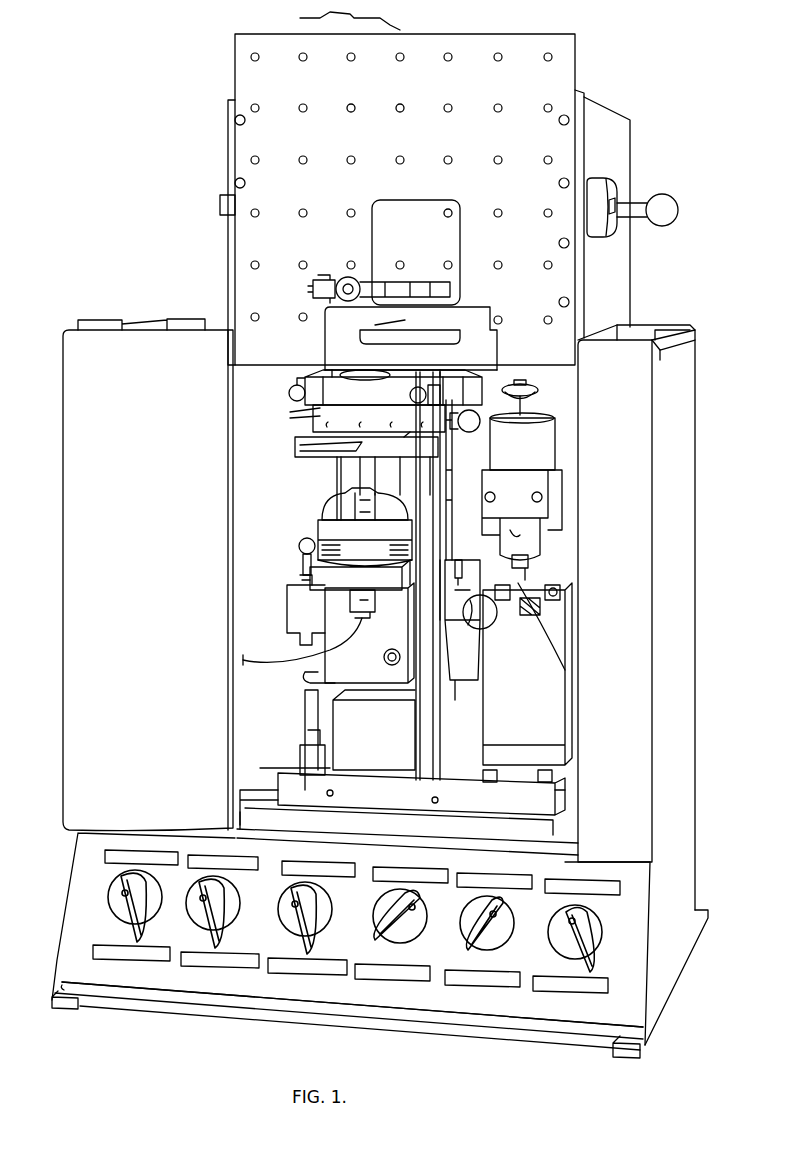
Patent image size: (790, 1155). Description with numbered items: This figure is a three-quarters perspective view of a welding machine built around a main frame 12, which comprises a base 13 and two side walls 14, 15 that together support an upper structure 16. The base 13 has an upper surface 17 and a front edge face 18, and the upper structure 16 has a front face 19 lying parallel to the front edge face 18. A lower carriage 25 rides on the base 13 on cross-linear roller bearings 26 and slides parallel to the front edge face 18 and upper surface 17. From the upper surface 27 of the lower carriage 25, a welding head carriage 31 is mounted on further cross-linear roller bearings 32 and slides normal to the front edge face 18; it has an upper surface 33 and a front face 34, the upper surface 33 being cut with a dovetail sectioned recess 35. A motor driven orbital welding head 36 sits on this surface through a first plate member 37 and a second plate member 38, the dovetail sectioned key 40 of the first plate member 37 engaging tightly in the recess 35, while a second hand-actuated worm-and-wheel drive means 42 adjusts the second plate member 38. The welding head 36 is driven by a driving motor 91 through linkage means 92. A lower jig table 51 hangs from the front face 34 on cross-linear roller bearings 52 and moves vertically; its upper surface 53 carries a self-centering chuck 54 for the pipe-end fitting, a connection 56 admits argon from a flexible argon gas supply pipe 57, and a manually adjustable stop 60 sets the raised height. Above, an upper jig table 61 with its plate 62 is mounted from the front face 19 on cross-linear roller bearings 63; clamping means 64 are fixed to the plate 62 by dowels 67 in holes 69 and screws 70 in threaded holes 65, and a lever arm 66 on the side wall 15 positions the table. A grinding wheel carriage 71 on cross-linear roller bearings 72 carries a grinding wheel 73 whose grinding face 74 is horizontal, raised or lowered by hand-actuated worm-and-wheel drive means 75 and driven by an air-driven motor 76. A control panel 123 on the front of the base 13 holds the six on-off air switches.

The main frame 12 is at (676, 941).
The base 13 is at (350, 836).
The side wall 14 is at (148, 575).
The side wall 15 is at (636, 617).
The upper structure 16 is at (620, 270).
The upper surface 17 is at (245, 790).
The front edge face 18 is at (557, 843).
The front face 19 is at (486, 355).
The lower carriage 25 is at (378, 810).
The cross-linear roller bearings 26 is at (562, 820).
The upper surface 27 is at (300, 768).
The welding head carriage 31 is at (387, 576).
The cross-linear roller bearings 32 is at (300, 760).
The upper surface 33 is at (320, 430).
The front face 34 is at (336, 475).
The dovetail sectioned recess 35 is at (294, 445).
The motor driven orbital welding head 36 is at (305, 380).
The first plate member 37 is at (320, 415).
The second plate member 38 is at (290, 392).
The dovetail sectioned key 40 is at (400, 452).
The second hand-actuated worm-and-wheel drive means 42 is at (469, 432).
The lower jig table 51 is at (351, 629).
The cross-linear roller bearings 52 is at (458, 556).
The upper surface 53 is at (298, 553).
The self-centering chuck 54 is at (322, 520).
The connection 56 is at (376, 600).
The flexible argon gas supply pipe 57 is at (352, 650).
The manually adjustable stop 60 is at (315, 545).
The upper jig table 61 is at (401, 199).
The plate 62 is at (234, 183).
The cross-linear roller bearings 63 is at (234, 121).
The clamping means 64 is at (334, 279).
The threaded holes 65 is at (405, 98).
The lever arm 66 is at (668, 210).
The dowels 67 is at (450, 210).
The holes 69 is at (352, 104).
The screws 70 is at (398, 209).
The grinding wheel carriage 71 is at (537, 701).
The cross-linear roller bearings 72 is at (548, 775).
The grinding wheel 73 is at (556, 410).
The grinding face 74 is at (540, 388).
The hand-actuated worm-and-wheel drive means 75 is at (490, 625).
The air-driven motor 76 is at (527, 545).
The driving motor 91 is at (468, 670).
The linkage means 92 is at (454, 480).
The control panel 123 is at (328, 992).